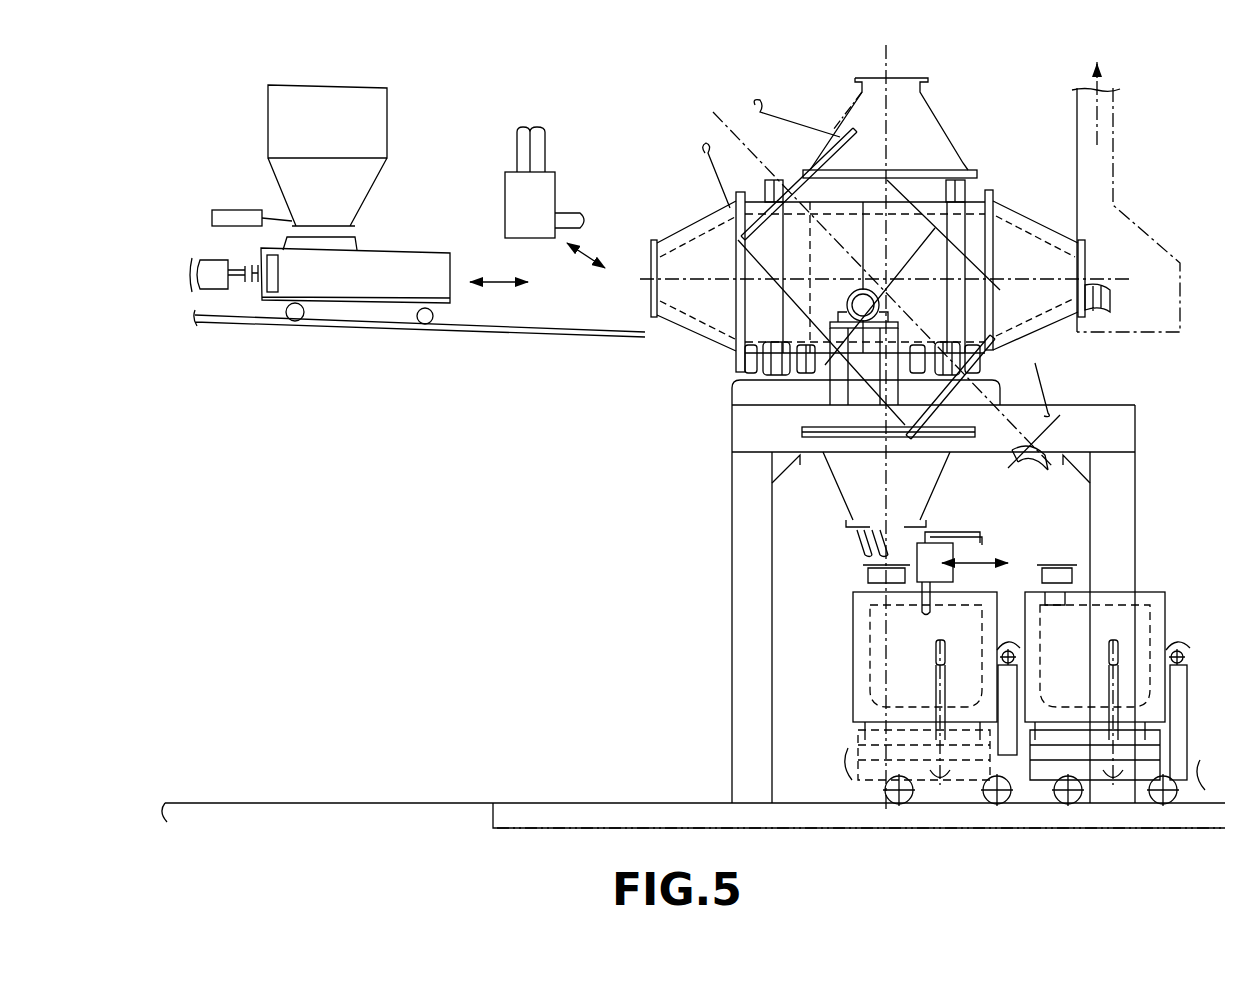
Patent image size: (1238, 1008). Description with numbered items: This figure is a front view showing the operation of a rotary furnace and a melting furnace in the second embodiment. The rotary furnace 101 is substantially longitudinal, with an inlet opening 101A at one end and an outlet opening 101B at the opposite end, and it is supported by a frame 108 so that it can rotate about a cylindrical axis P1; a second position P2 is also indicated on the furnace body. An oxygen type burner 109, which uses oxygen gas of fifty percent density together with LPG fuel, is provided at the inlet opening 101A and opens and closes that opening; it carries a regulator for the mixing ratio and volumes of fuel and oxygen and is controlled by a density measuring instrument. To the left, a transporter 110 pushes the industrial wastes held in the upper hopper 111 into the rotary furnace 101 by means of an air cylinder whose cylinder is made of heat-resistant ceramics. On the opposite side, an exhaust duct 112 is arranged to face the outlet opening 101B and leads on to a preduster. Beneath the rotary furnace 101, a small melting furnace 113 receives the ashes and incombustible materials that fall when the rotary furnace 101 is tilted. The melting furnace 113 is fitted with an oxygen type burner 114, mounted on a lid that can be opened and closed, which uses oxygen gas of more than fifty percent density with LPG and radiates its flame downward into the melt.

The rotary furnace 101 is at (696, 255).
The inlet opening 101A is at (640, 263).
The outlet opening 101B is at (1096, 243).
The frame 108 is at (1127, 490).
The oxygen type burner 109 is at (515, 208).
The transporter 110 is at (266, 336).
The upper hopper 111 is at (280, 114).
The exhaust duct 112 is at (1113, 118).
The small melting furnace 113 is at (862, 650).
The oxygen type burner 114 is at (958, 525).
The cylindrical axis P1 is at (1125, 270).
The second position P2 is at (858, 306).